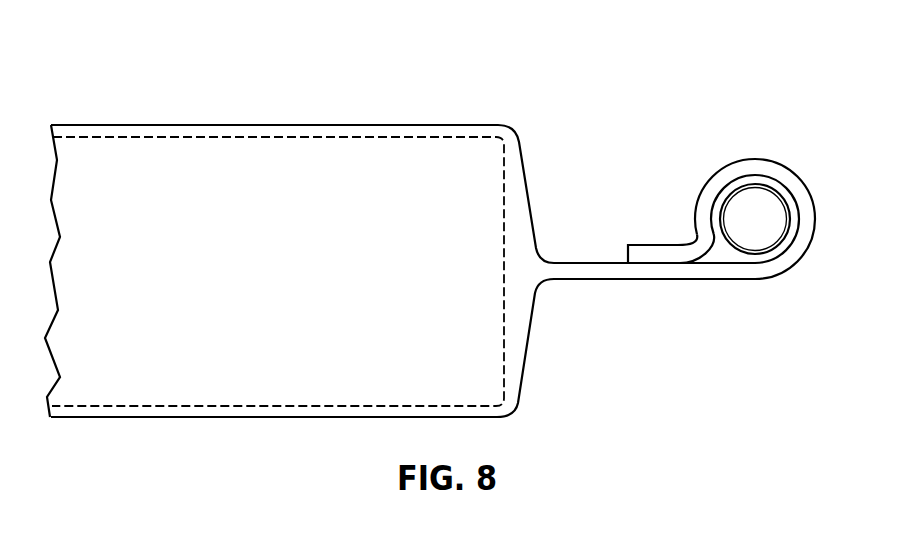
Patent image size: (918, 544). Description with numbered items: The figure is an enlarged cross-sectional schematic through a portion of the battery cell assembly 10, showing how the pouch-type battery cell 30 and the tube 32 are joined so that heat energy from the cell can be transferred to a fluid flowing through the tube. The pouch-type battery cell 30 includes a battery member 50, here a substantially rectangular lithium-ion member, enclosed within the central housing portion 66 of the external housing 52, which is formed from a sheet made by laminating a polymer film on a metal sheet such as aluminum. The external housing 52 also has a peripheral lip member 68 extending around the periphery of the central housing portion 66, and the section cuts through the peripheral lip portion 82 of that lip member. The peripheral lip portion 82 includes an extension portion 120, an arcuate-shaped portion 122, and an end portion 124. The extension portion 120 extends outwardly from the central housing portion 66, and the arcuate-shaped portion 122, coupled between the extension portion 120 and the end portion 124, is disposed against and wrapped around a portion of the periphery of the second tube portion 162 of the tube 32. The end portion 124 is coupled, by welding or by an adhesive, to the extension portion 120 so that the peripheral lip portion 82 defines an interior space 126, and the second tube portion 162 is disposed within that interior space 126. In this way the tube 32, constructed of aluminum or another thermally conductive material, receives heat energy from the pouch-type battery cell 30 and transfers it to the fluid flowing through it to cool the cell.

The battery cell assembly 10 is at (293, 103).
The pouch-type battery cell 30 is at (365, 123).
The tube 32 is at (748, 183).
The battery member 50 is at (220, 138).
The external housing 52 is at (167, 125).
The central housing portion 66 is at (520, 158).
The peripheral lip member 68 is at (585, 279).
The peripheral lip portion 82 is at (594, 263).
The extension portion 120 is at (637, 279).
The arcuate-shaped portion 122 is at (790, 175).
The end portion 124 is at (650, 245).
The interior space 126 is at (724, 198).
The second tube portion 162 is at (768, 254).